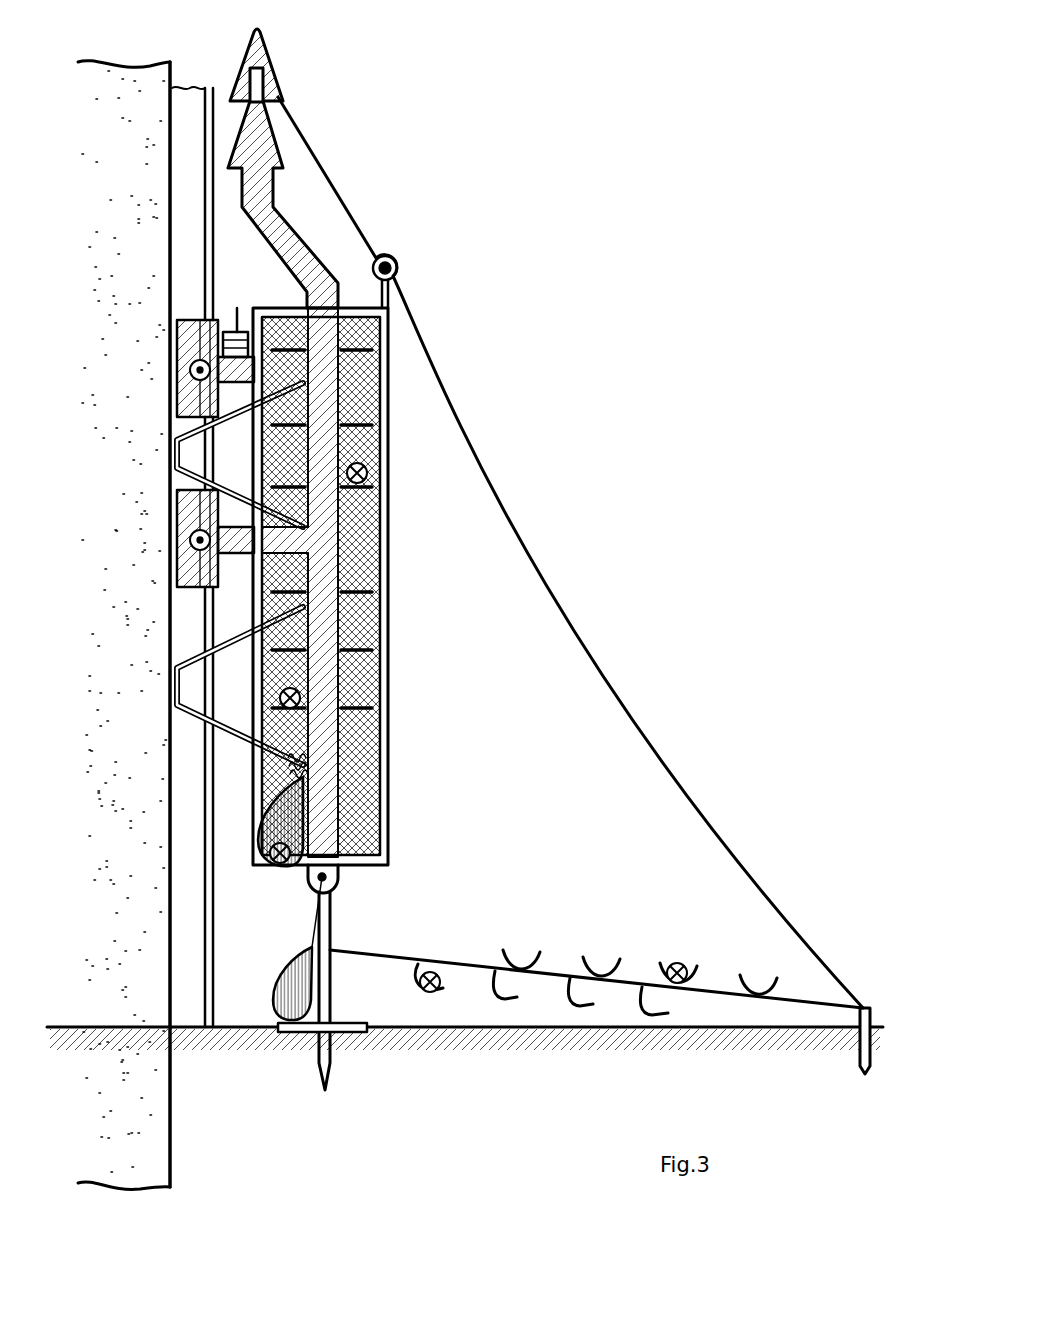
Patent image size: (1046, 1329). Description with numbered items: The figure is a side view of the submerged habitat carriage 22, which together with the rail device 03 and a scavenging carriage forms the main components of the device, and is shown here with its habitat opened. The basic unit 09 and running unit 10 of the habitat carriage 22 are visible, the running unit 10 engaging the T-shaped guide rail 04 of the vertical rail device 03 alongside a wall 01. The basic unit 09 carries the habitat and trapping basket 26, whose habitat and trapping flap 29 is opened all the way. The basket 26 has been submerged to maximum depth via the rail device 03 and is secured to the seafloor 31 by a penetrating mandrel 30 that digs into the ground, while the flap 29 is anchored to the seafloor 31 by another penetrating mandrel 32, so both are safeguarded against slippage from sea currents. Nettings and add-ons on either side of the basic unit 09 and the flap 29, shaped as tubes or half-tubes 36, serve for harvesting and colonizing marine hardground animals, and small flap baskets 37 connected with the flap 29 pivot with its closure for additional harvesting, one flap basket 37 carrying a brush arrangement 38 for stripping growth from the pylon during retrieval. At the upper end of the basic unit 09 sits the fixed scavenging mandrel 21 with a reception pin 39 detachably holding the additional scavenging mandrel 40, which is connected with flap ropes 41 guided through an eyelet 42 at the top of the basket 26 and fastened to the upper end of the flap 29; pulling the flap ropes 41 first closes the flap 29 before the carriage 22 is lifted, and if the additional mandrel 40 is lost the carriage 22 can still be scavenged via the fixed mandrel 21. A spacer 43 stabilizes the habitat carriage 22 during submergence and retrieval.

The wall 01 is at (100, 74).
The rail device 03 is at (194, 100).
The T-shaped guide rail 04 is at (176, 226).
The basic unit 09 is at (327, 824).
The running unit 10 is at (193, 340).
The fixed scavenging mandrel 21 is at (259, 146).
The submerged habitat carriage 22 is at (388, 730).
The habitat and trapping basket 26 is at (363, 787).
The habitat and trapping flap 29 is at (453, 960).
The penetrating mandrel 30 is at (322, 1060).
The seafloor 31 is at (513, 1036).
The penetrating mandrel 32 is at (865, 1048).
The tubes or half-tubes 36 is at (586, 975).
The flap baskets 37 is at (292, 864).
The brush arrangement 38 is at (284, 761).
The reception pin 39 is at (256, 88).
The additional scavenging mandrel 40 is at (261, 51).
The flap ropes 41 is at (546, 606).
The eyelet 42 is at (393, 266).
The spacer 43 is at (176, 681).